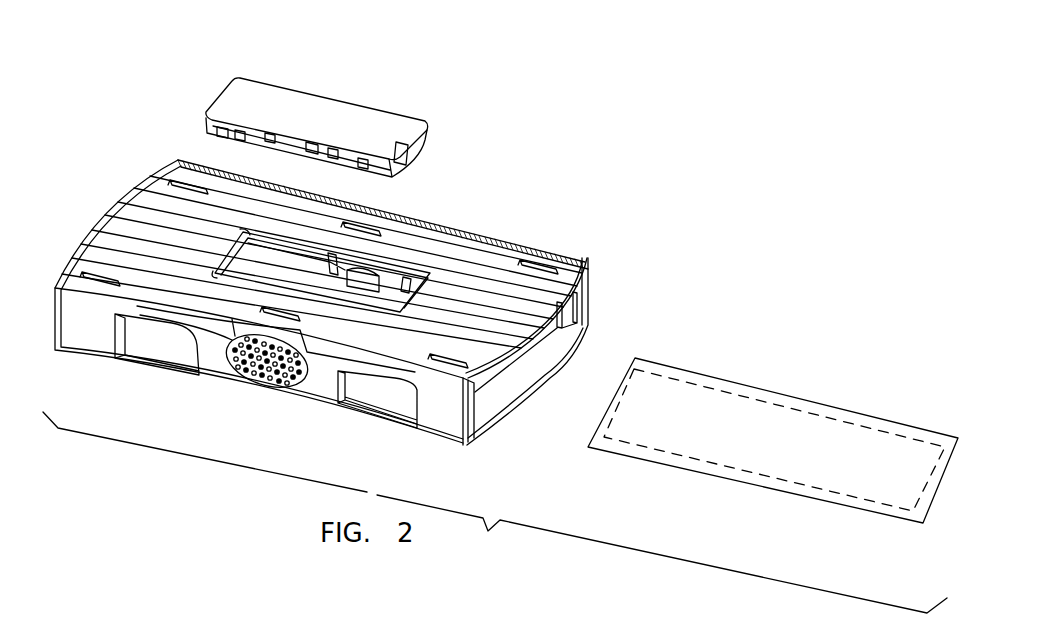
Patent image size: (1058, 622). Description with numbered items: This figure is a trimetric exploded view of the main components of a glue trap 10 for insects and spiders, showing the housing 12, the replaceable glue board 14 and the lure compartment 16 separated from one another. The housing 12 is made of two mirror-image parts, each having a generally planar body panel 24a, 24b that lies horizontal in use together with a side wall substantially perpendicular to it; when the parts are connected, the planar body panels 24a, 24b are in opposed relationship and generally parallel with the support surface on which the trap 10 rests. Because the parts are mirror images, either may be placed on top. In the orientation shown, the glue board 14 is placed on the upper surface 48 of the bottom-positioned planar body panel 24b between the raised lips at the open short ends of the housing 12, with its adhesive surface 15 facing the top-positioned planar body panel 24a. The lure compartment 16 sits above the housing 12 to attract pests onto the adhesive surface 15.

The glue trap 10 is at (671, 169).
The housing 12 is at (495, 234).
The replaceable glue board 14 is at (724, 370).
The adhesive surface 15 is at (830, 440).
The lure compartment 16 is at (305, 73).
The planar body panel 24a is at (107, 230).
The planar body panel 24b is at (576, 342).
The upper surface 48 is at (495, 387).